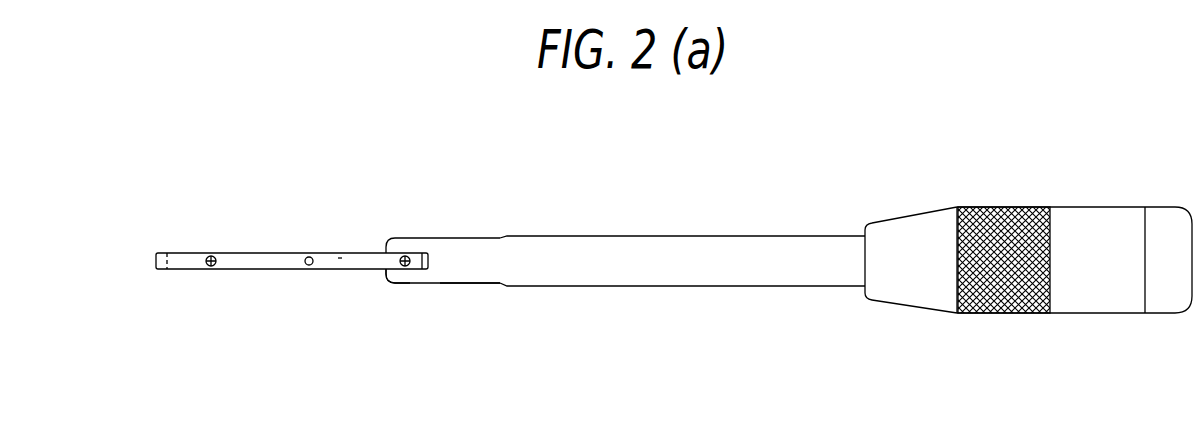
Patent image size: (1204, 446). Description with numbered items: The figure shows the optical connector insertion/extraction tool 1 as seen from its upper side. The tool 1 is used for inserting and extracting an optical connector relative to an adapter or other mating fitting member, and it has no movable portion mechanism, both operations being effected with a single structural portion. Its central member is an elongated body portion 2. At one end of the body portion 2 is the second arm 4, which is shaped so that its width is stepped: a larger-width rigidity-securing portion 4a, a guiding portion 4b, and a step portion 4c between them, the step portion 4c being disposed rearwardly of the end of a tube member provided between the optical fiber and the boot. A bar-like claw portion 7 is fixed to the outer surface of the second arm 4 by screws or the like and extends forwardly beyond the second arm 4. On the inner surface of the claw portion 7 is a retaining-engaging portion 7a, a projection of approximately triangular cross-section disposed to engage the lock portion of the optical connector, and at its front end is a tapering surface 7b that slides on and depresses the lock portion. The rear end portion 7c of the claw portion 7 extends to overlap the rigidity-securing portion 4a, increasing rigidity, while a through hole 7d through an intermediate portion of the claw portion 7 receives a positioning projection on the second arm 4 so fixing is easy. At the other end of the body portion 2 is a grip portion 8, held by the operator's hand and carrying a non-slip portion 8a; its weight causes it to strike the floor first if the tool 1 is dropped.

The optical connector insertion/extraction tool 1 is at (615, 231).
The body portion 2 is at (773, 247).
The second arm 4 is at (457, 247).
The rigidity-securing portion 4a is at (460, 272).
The guiding portion 4b is at (340, 262).
The step portion 4c is at (387, 275).
The claw portion 7 is at (240, 270).
The retaining-engaging portion 7a is at (166, 270).
The tapering surface 7b is at (177, 321).
The rear end portion 7c is at (415, 256).
The through hole 7d is at (306, 257).
The grip portion 8 is at (1070, 205).
The non-slip portion 8a is at (1000, 310).